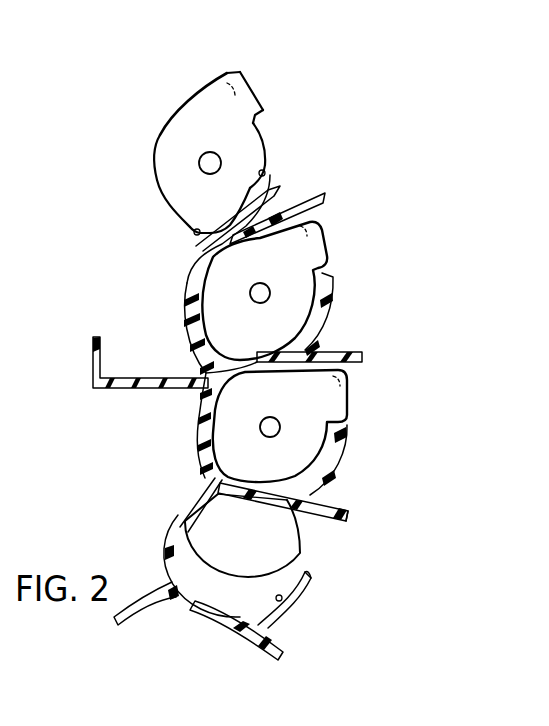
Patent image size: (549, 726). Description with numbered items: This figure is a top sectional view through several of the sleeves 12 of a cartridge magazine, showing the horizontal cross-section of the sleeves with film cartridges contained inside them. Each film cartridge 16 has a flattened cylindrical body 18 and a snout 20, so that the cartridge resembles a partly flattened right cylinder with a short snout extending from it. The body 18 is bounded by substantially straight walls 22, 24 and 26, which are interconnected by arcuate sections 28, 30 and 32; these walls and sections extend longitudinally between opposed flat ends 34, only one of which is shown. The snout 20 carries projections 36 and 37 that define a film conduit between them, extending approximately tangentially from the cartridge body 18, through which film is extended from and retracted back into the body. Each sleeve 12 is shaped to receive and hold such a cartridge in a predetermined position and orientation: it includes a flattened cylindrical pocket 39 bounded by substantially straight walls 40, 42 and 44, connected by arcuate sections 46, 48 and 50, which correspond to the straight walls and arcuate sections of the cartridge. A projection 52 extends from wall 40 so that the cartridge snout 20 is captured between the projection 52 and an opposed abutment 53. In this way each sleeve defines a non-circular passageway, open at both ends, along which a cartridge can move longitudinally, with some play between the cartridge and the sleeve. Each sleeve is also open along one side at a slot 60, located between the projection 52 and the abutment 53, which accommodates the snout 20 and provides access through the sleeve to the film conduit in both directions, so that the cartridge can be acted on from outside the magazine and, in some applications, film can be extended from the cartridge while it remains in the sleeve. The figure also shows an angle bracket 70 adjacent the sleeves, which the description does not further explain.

The sleeve 12 is at (339, 303).
The film cartridge 16 is at (156, 120).
The cartridge body 18 is at (242, 140).
The snout 20 is at (253, 96).
The straight wall 22 is at (192, 100).
The straight wall 24 is at (165, 202).
The straight wall 26 is at (262, 173).
The arcuate section 28 is at (155, 157).
The arcuate section 30 is at (193, 230).
The arcuate section 32 is at (273, 183).
The flat end 34 is at (226, 214).
The projection 36 is at (233, 72).
The projection 37 is at (263, 112).
The flattened cylindrical pocket 39 is at (257, 576).
The straight wall 40 is at (287, 500).
The straight wall 42 is at (183, 530).
The straight wall 44 is at (200, 610).
The arcuate section 46 is at (217, 495).
The arcuate section 48 is at (162, 573).
The arcuate section 50 is at (287, 603).
The projection 52 is at (333, 522).
The abutment 53 is at (308, 568).
The slot 60 is at (330, 547).
The angle bracket 70 is at (145, 390).